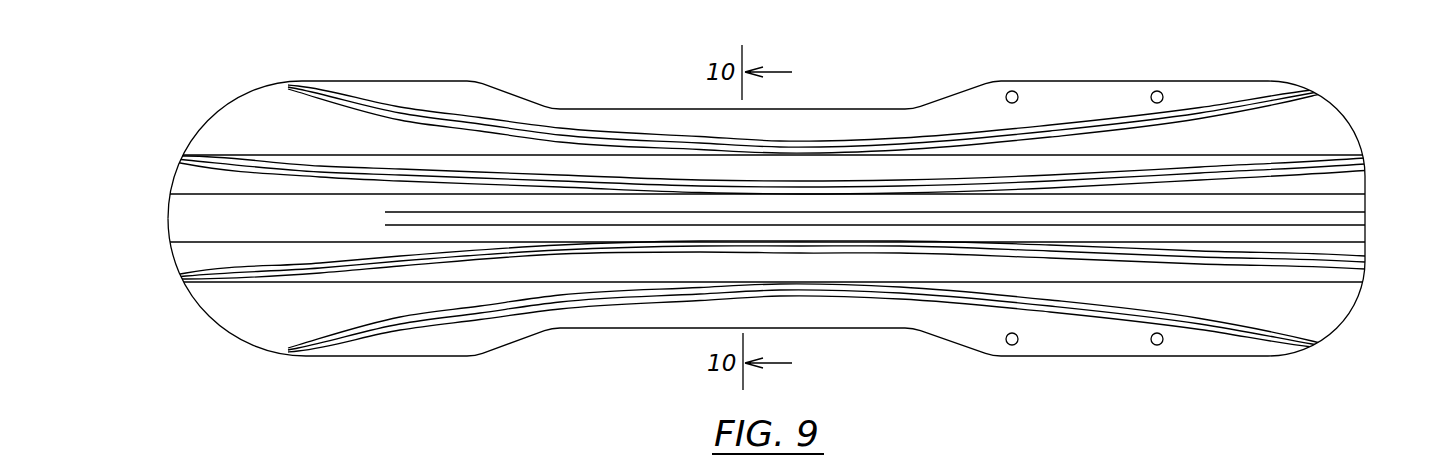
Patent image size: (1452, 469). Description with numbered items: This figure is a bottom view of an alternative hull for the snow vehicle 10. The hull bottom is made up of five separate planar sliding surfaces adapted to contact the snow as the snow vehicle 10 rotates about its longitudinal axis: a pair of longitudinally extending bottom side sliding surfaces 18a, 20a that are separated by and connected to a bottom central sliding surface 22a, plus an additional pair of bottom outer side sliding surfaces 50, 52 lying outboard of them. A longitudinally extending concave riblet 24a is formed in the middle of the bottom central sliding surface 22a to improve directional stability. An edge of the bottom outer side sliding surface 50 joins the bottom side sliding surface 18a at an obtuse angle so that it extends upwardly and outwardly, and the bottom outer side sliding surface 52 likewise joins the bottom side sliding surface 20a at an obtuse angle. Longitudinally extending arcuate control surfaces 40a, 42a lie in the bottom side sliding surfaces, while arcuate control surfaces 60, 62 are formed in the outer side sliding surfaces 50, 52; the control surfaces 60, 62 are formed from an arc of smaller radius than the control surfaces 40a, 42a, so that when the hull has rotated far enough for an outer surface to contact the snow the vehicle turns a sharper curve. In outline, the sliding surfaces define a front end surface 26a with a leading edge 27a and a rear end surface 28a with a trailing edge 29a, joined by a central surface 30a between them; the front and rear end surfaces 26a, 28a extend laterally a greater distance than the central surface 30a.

The snow vehicle 10 is at (479, 58).
The bottom side sliding surface 18a is at (191, 180).
The bottom side sliding surface 20a is at (194, 258).
The bottom central sliding surface 22a is at (205, 219).
The riblet 24a is at (1350, 218).
The front end surface 26a is at (316, 360).
The leading edge 27a is at (227, 318).
The rear end surface 28a is at (1237, 351).
The trailing edge 29a is at (1366, 178).
The central surface 30a is at (893, 331).
The arcuate control surface 40a is at (207, 160).
The arcuate control surface 42a is at (215, 277).
The bottom outer side sliding surface 50 is at (267, 118).
The bottom outer side sliding surface 52 is at (270, 317).
The arcuate control surface 60 is at (302, 82).
The arcuate control surface 62 is at (305, 353).